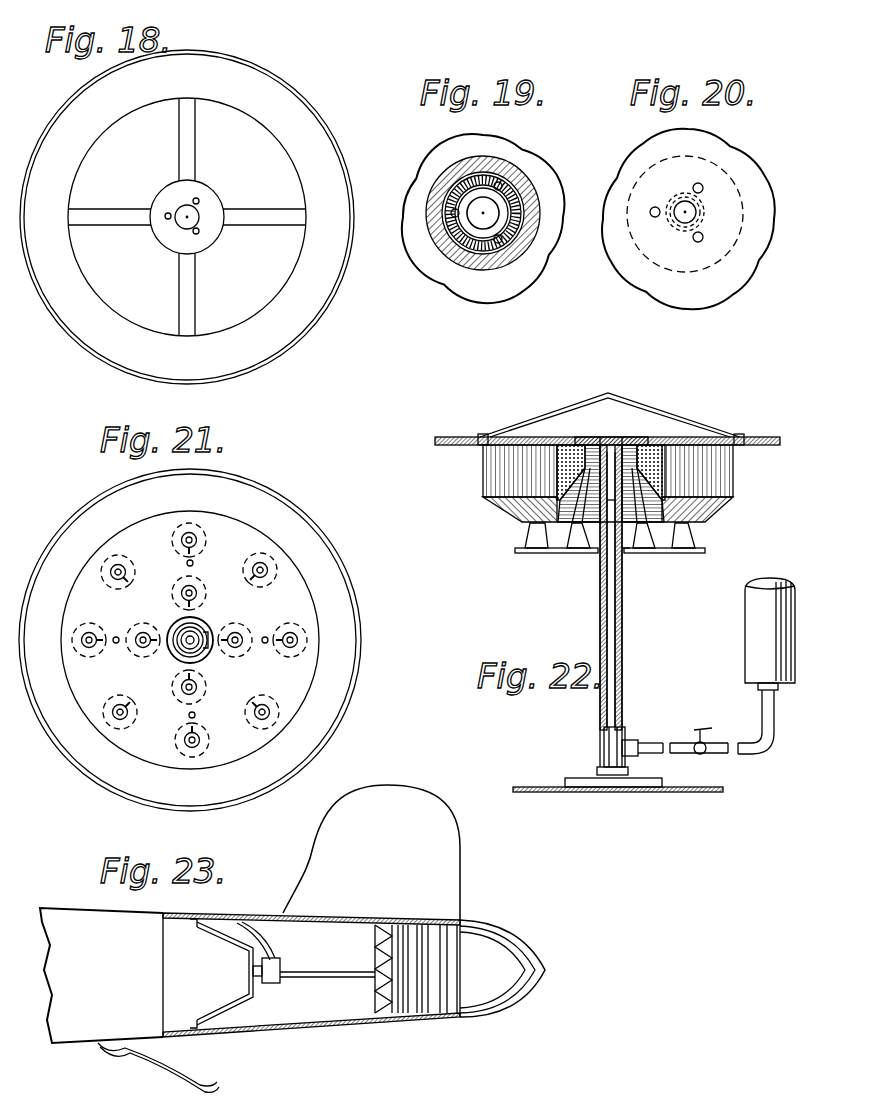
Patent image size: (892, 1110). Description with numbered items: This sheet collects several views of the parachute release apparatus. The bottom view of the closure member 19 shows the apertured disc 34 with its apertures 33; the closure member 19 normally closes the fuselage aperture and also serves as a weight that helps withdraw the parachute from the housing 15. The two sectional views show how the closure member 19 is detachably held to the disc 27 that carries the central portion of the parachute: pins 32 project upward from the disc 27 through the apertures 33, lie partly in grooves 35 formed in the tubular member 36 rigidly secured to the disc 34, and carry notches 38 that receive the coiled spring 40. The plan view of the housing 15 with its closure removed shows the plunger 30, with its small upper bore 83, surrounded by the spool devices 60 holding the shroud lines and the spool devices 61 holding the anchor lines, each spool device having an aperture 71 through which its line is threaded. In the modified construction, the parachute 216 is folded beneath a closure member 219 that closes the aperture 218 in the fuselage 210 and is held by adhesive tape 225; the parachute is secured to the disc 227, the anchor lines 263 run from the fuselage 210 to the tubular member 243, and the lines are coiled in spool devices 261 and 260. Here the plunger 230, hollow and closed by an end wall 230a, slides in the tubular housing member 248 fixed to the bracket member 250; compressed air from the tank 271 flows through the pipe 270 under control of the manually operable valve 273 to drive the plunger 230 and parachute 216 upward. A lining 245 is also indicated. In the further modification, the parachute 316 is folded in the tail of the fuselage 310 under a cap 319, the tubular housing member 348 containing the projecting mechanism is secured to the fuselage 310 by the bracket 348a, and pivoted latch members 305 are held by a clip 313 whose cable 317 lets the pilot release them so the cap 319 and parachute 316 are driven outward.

In FIG. 18, the closure member 19 is at (323, 157).
In FIG. 18, the apertures 33 is at (194, 233).
In FIG. 18, the apertured disc 34 is at (206, 238).
In FIG. 19, the grooves 35 is at (512, 193).
In FIG. 19, the tubular member 36 is at (520, 210).
In FIG. 19, the coiled spring 40 is at (488, 183).
In FIG. 20, the disc 27 is at (738, 248).
In FIG. 20, the pins 32 is at (702, 186).
In FIG. 20, the notches 38 is at (668, 204).
In FIG. 21, the housing 15 is at (305, 514).
In FIG. 21, the plunger 30 is at (200, 630).
In FIG. 21, the spool devices 60 is at (306, 640).
In FIG. 21, the spool devices 61 is at (200, 581).
In FIG. 21, the aperture 71 is at (205, 688).
In FIG. 21, the bore 83 is at (186, 645).
In FIG. 22, the fuselage 210 is at (449, 436).
In FIG. 22, the parachute 216 is at (662, 477).
In FIG. 22, the aperture 218 is at (745, 436).
In FIG. 22, the closure member 219 is at (672, 413).
In FIG. 22, the adhesive tape 225 is at (485, 436).
In FIG. 22, the disc 227 is at (591, 437).
In FIG. 22, the plunger 230 is at (607, 440).
In FIG. 22, the end wall 230a is at (614, 442).
In FIG. 22, the tubular member 243 is at (628, 467).
In FIG. 22, the lining 245 is at (490, 478).
In FIG. 22, the tubular housing member 248 is at (626, 648).
In FIG. 22, the bracket member 250 is at (645, 781).
In FIG. 22, the spool devices 260 is at (525, 536).
In FIG. 22, the spool devices 261 is at (576, 531).
In FIG. 22, the anchor lines 263 is at (628, 550).
In FIG. 22, the pipe 270 is at (721, 758).
In FIG. 22, the tank 271 is at (760, 645).
In FIG. 22, the valve 273 is at (703, 727).
In FIG. 23, the latch members 305 is at (283, 970).
In FIG. 23, the fuselage 310 is at (246, 915).
In FIG. 23, the clip 313 is at (278, 953).
In FIG. 23, the parachute 316 is at (415, 993).
In FIG. 23, the cable 317 is at (255, 938).
In FIG. 23, the cap 319 is at (493, 934).
In FIG. 23, the tubular housing member 348 is at (322, 983).
In FIG. 23, the bracket 348a is at (230, 1032).